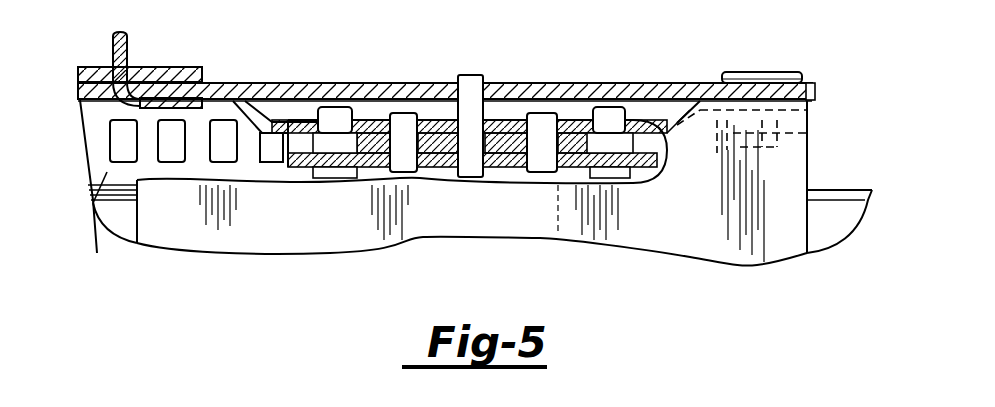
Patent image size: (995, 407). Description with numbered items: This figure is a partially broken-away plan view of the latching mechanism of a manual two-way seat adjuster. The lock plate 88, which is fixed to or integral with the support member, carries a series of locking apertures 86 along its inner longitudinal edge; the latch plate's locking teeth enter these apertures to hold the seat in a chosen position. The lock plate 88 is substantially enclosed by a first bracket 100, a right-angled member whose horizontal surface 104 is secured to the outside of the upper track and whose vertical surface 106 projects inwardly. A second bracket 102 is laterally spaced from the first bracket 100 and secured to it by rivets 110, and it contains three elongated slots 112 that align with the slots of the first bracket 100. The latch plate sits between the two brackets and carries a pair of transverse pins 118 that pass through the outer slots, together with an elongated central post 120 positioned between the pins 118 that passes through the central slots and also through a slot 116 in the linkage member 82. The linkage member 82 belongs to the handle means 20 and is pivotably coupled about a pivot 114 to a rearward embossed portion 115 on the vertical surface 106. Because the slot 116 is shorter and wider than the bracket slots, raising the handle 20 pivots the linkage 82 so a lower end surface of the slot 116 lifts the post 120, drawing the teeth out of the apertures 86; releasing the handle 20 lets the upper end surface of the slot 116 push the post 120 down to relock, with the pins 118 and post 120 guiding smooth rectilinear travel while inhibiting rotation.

The handle means 20 is at (148, 72).
The linkage member 82 is at (254, 88).
The locking apertures 86 is at (160, 133).
The lock plate 88 is at (109, 191).
The first bracket 100 is at (797, 155).
The second bracket 102 is at (374, 172).
The horizontal surface 104 is at (690, 232).
The vertical surface 106 is at (374, 126).
The rivets 110 is at (329, 108).
The elongated slots 112 is at (480, 177).
The pivot 114 is at (778, 72).
The rearward embossed portion 115 is at (710, 100).
The slot 116 is at (493, 83).
The transverse pins 118 is at (403, 122).
The elongated central post 120 is at (476, 79).